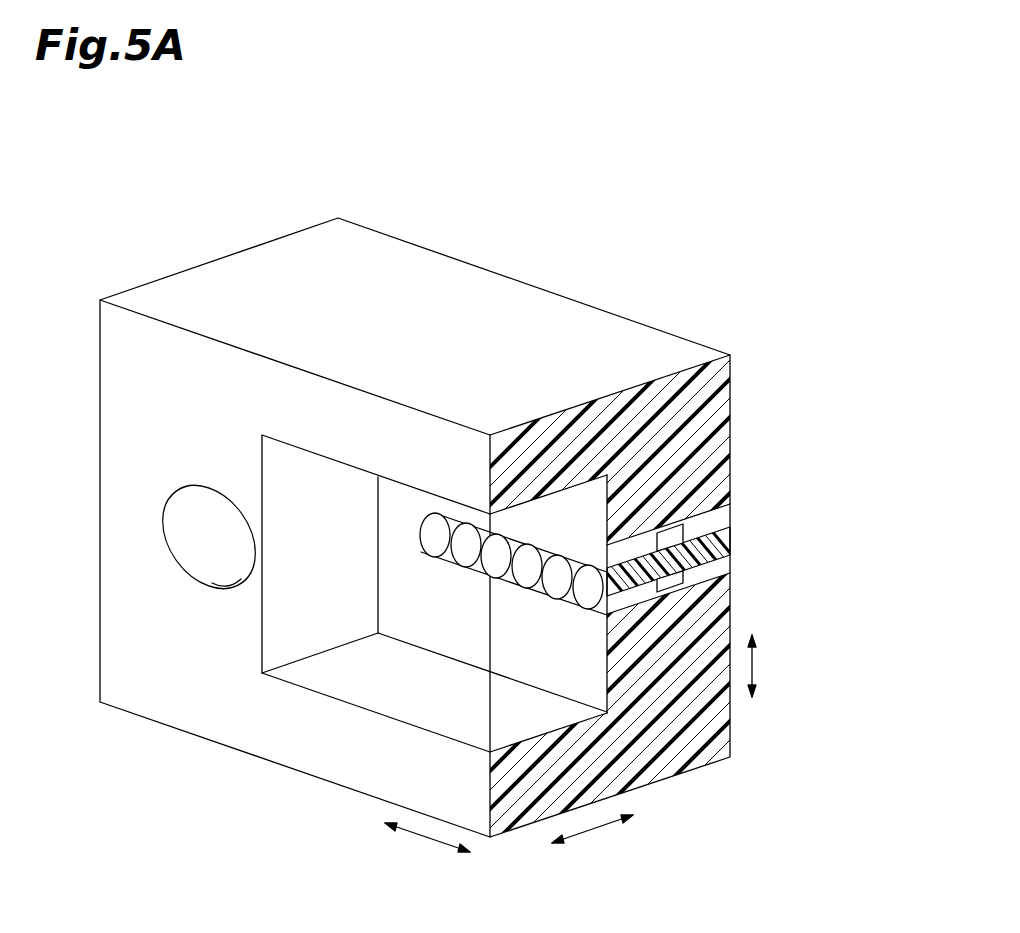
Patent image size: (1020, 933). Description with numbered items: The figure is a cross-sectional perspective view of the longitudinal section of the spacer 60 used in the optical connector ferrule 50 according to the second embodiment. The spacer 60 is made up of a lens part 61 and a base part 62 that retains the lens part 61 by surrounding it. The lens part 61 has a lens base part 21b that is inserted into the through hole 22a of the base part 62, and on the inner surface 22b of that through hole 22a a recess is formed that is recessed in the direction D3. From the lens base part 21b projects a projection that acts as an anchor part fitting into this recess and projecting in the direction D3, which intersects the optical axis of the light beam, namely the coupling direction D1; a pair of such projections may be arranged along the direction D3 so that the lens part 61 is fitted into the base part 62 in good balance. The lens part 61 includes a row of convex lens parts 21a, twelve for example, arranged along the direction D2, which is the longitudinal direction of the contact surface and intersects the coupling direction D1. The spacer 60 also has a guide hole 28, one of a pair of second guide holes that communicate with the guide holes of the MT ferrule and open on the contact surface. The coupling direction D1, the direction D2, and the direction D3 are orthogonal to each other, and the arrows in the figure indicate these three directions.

The optical connector ferrule 50 is at (589, 211).
The spacer 60 is at (390, 252).
The base part 62 is at (705, 443).
The lens part 61 is at (715, 550).
The lens base part 21b is at (738, 557).
The inner surface 22b is at (706, 585).
The convex lens parts 21a is at (425, 534).
The through hole 22a is at (570, 588).
The guide holes 28 is at (200, 543).
The coupling direction D1 is at (592, 839).
The direction D2 is at (427, 847).
The direction D3 is at (772, 666).